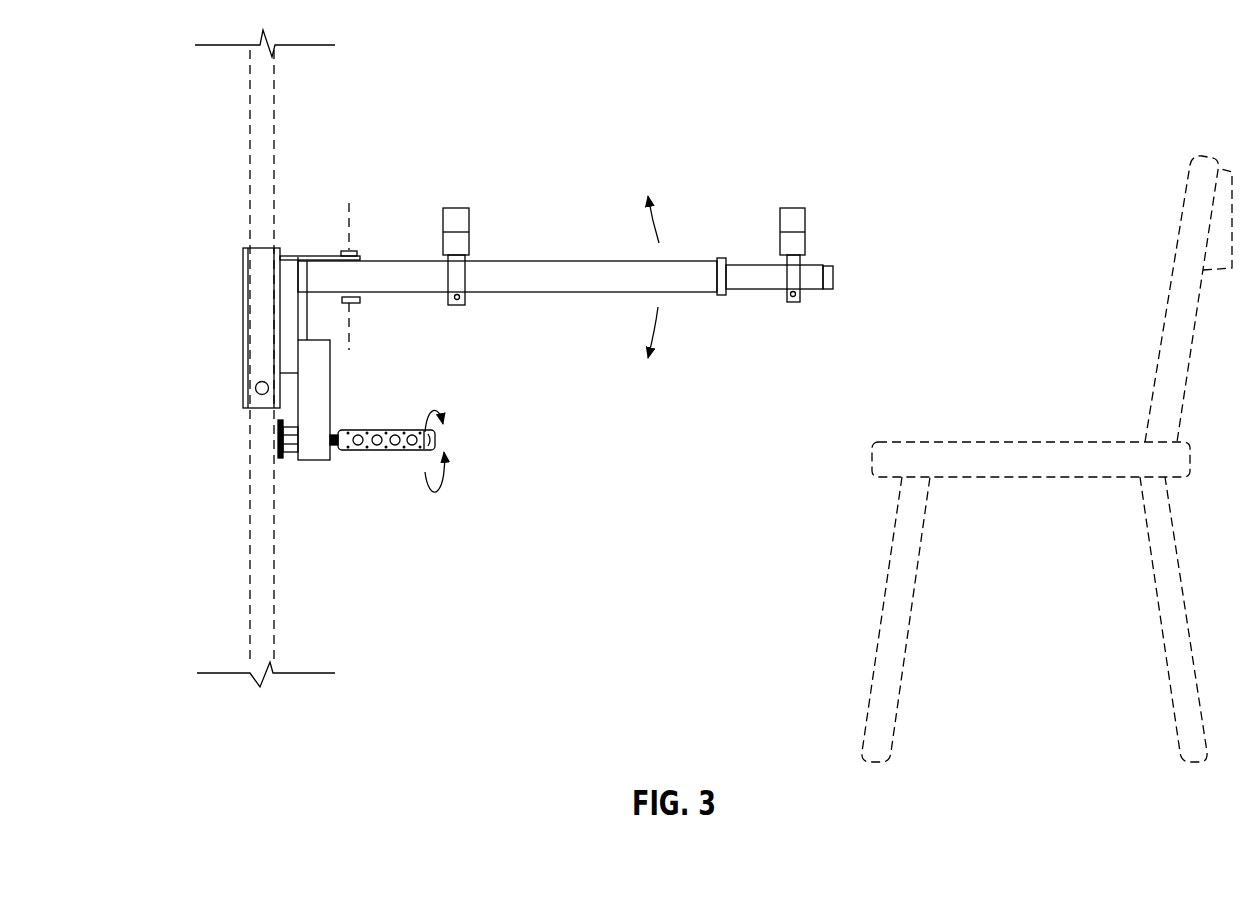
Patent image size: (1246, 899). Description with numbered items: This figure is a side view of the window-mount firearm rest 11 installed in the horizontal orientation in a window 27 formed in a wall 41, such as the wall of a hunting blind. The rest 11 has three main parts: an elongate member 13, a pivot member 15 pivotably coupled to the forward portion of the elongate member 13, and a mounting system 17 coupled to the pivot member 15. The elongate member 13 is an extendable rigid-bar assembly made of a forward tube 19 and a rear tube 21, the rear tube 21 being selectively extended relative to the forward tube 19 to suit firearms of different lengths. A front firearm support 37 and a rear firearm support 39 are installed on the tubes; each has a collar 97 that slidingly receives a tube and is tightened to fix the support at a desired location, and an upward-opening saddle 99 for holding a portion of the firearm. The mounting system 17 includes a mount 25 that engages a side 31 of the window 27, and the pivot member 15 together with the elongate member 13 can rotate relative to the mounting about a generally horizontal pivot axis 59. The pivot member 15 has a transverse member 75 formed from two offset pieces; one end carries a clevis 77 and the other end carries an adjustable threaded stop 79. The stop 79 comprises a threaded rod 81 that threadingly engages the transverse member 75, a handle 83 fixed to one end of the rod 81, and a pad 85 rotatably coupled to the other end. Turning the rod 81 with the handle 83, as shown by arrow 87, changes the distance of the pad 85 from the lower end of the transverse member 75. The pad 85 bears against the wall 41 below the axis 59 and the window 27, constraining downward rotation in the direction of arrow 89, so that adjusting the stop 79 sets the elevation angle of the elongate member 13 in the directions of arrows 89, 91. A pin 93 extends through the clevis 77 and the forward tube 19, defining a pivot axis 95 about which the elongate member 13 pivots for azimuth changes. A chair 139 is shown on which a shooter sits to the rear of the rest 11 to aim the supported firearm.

The window-mount firearm rest 11 is at (634, 108).
The elongate member 13 is at (613, 295).
The pivot member 15 is at (292, 249).
The mounting system 17 is at (243, 305).
The forward tube 19 is at (565, 270).
The rear tube 21 is at (758, 288).
The mount 25 is at (243, 357).
The window 27 is at (247, 140).
The side 31 is at (258, 184).
The front firearm support 37 is at (455, 206).
The rear firearm support 39 is at (791, 206).
The wall 41 is at (271, 588).
The pivot axis 59 is at (255, 393).
The transverse member 75 is at (324, 392).
The clevis 77 is at (312, 254).
The adjustable threaded stop 79 is at (396, 461).
The threaded rod 81 is at (336, 451).
The handle 83 is at (397, 437).
The pad 85 is at (284, 456).
The arrow 87 is at (440, 468).
The arrow 89 is at (660, 343).
The arrow 91 is at (658, 210).
The pin 93 is at (361, 301).
The pivot axis 95 is at (351, 203).
The collar 97 is at (464, 299).
The saddle 99 is at (467, 232).
The chair 139 is at (871, 458).